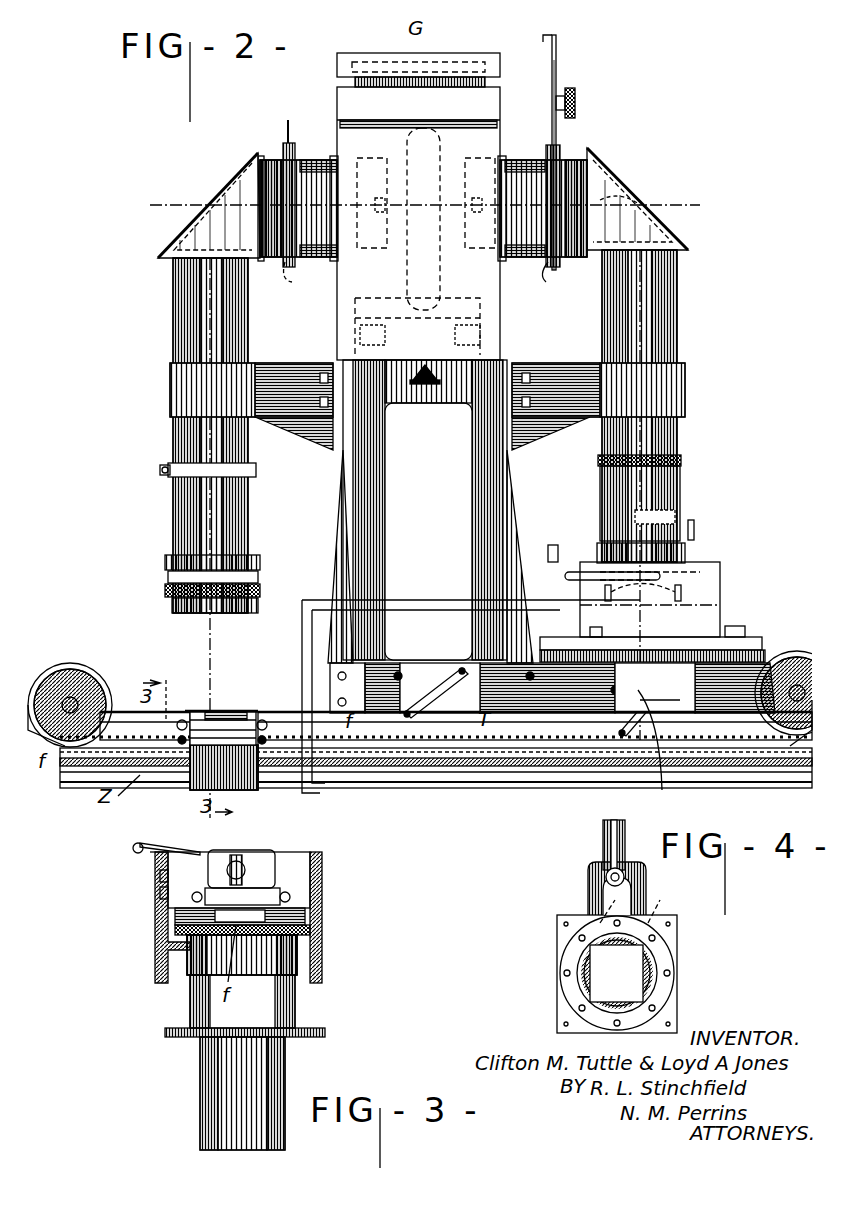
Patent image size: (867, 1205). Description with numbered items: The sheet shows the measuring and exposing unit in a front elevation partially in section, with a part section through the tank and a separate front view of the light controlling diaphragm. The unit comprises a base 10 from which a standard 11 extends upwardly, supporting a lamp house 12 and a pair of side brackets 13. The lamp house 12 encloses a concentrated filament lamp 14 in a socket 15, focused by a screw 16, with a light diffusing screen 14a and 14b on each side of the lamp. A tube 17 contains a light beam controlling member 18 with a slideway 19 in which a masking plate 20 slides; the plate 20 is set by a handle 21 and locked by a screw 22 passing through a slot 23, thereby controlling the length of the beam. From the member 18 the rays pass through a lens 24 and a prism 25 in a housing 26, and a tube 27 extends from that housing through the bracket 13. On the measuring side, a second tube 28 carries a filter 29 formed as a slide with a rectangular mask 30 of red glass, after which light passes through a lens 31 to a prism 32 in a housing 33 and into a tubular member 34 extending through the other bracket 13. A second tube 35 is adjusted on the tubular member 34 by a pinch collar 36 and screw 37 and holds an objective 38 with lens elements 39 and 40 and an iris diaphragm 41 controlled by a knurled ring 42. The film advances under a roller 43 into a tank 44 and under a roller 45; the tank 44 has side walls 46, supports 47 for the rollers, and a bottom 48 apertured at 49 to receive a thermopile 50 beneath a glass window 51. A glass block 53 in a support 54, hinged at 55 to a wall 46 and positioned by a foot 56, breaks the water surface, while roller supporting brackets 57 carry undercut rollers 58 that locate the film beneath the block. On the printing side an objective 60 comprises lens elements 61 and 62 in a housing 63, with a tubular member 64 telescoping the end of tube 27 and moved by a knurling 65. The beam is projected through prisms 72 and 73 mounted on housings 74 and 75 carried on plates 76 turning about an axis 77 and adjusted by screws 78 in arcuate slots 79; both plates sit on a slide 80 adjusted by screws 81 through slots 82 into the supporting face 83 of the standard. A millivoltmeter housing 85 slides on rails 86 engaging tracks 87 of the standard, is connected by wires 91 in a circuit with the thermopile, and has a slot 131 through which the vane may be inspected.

In FIG. 2, the base 10 is at (430, 775).
In FIG. 2, the standard 11 is at (392, 408).
In FIG. 2, the lamp house 12 is at (485, 280).
In FIG. 2, the side brackets 13 is at (288, 385).
In FIG. 2, the concentrated filament lamp 14 is at (423, 138).
In FIG. 2, the light diffusing screen 14a is at (473, 189).
In FIG. 2, the light diffusing screen 14b is at (382, 190).
In FIG. 2, the socket 15 is at (396, 298).
In FIG. 2, the screw 16 is at (440, 395).
In FIG. 2, the tube 17 is at (522, 180).
In FIG. 2, the light beam controlling member 18 is at (560, 165).
In FIG. 4, the light beam controlling member 18 is at (565, 915).
In FIG. 2, the slideway 19 is at (558, 275).
In FIG. 4, the slideway 19 is at (642, 901).
In FIG. 2, the masking plate 20 is at (552, 82).
In FIG. 4, the masking plate 20 is at (560, 940).
In FIG. 2, the handle 21 is at (550, 35).
In FIG. 4, the handle 21 is at (605, 832).
In FIG. 2, the screw 22 is at (575, 102).
In FIG. 4, the screw 22 is at (606, 876).
In FIG. 4, the slot 23 is at (616, 850).
In FIG. 2, the lens 24 is at (598, 182).
In FIG. 2, the prism 25 is at (662, 198).
In FIG. 2, the housing 26 is at (672, 240).
In FIG. 2, the tube 27 is at (645, 308).
In FIG. 2, the second tube 28 is at (308, 175).
In FIG. 2, the filter 29 is at (287, 135).
In FIG. 2, the rectangular mask 30 is at (301, 277).
In FIG. 2, the lens 31 is at (252, 170).
In FIG. 2, the prism 32 is at (175, 248).
In FIG. 2, the housing 33 is at (220, 200).
In FIG. 2, the tubular member 34 is at (200, 310).
In FIG. 2, the second tube 35 is at (240, 508).
In FIG. 2, the pinch collar 36 is at (180, 466).
In FIG. 2, the screw 37 is at (165, 477).
In FIG. 2, the objective 38 is at (262, 578).
In FIG. 2, the lens element 39 is at (200, 560).
In FIG. 2, the lens element 40 is at (262, 590).
In FIG. 2, the iris diaphragm 41 is at (172, 603).
In FIG. 2, the knurled ring 42 is at (215, 612).
In FIG. 2, the roller 43 is at (78, 700).
In FIG. 2, the tank 44 is at (456, 726).
In FIG. 3, the tank 44 is at (300, 890).
In FIG. 2, the roller 45 is at (797, 665).
In FIG. 2, the side walls 46 is at (550, 719).
In FIG. 3, the side walls 46 is at (322, 862).
In FIG. 2, the supports 47 is at (105, 680).
In FIG. 2, the bottom 48 is at (528, 770).
In FIG. 3, the bottom 48 is at (168, 942).
In FIG. 3, the aperture 49 is at (305, 932).
In FIG. 2, the thermopile 50 is at (224, 751).
In FIG. 3, the thermopile 50 is at (295, 1002).
In FIG. 3, the glass window 51 is at (305, 915).
In FIG. 2, the glass block 53 is at (245, 712).
In FIG. 3, the glass block 53 is at (252, 855).
In FIG. 2, the support 54 is at (182, 720).
In FIG. 3, the support 54 is at (275, 860).
In FIG. 2, the hinge 55 is at (232, 712).
In FIG. 3, the hinge 55 is at (140, 845).
In FIG. 3, the foot 56 is at (160, 895).
In FIG. 3, the roller supporting brackets 57 is at (270, 898).
In FIG. 2, the undercut rollers 58 is at (165, 788).
In FIG. 3, the undercut rollers 58 is at (222, 925).
In FIG. 2, the objective 60 is at (688, 552).
In FIG. 2, the lens element 61 is at (592, 552).
In FIG. 2, the lens element 62 is at (645, 595).
In FIG. 2, the housing 63 is at (696, 530).
In FIG. 2, the tubular member 64 is at (683, 483).
In FIG. 2, the knurling 65 is at (600, 460).
In FIG. 2, the prism 72 is at (665, 747).
In FIG. 2, the prism 73 is at (470, 770).
In FIG. 2, the housing 74 is at (650, 705).
In FIG. 2, the housing 75 is at (400, 716).
In FIG. 2, the plates 76 is at (440, 670).
In FIG. 2, the axis 77 is at (625, 716).
In FIG. 2, the screws 78 is at (562, 685).
In FIG. 2, the arcuate slots 79 is at (706, 720).
In FIG. 2, the slide 80 is at (495, 670).
In FIG. 2, the screws 81 is at (595, 632).
In FIG. 2, the slots 82 is at (497, 645).
In FIG. 2, the supporting face 83 is at (355, 675).
In FIG. 2, the housing 85 is at (705, 598).
In FIG. 2, the rails 86 is at (568, 635).
In FIG. 2, the tracks 87 is at (590, 630).
In FIG. 2, the wires 91 is at (440, 592).
In FIG. 2, the slot 131 is at (700, 572).